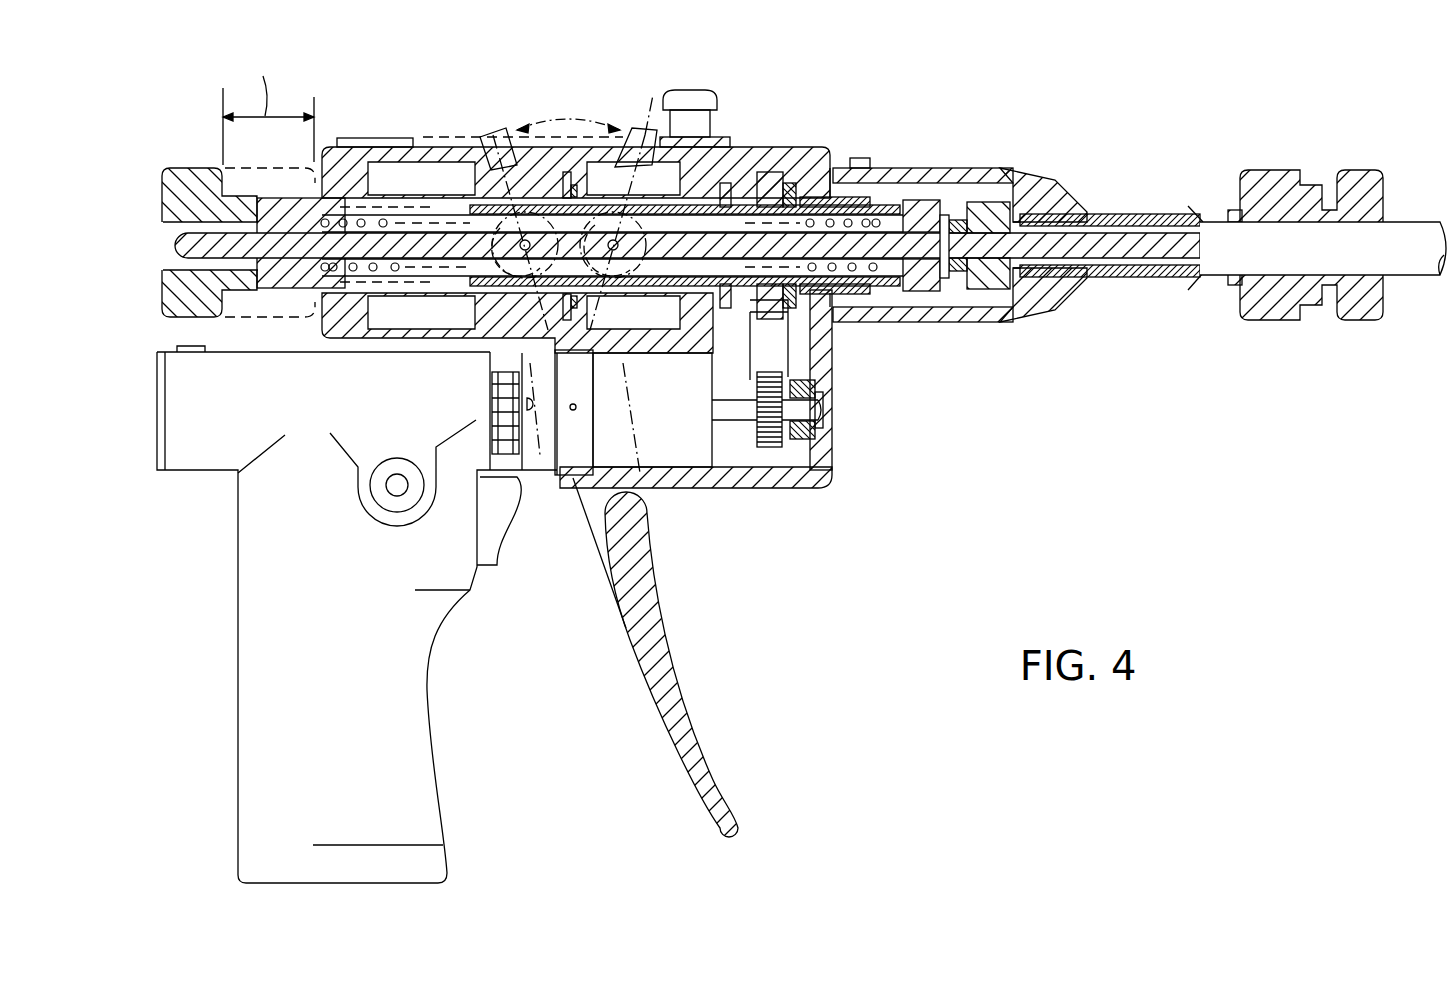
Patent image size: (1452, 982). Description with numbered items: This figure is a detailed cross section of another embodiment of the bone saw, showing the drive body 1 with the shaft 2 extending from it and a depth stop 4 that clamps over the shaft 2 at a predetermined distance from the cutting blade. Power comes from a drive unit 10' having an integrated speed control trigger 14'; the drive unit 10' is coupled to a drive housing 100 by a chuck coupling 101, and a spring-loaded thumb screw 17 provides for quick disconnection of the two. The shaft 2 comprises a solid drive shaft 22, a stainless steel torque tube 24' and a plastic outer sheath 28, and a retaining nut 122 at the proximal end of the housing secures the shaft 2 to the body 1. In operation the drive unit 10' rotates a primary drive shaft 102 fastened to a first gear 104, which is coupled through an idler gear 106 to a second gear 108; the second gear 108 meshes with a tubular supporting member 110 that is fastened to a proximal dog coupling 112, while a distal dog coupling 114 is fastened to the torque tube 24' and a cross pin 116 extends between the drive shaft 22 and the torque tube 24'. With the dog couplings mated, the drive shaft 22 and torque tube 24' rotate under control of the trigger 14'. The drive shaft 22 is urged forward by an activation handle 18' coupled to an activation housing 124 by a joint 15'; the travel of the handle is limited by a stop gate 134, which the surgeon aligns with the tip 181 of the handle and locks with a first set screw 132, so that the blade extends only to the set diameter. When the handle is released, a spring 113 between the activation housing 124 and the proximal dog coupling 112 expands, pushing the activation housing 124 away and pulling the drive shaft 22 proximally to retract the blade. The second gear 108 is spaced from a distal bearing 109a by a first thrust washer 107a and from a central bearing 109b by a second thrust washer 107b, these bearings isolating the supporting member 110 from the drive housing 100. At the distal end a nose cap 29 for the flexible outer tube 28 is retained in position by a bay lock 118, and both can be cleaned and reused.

The drive body 1 is at (334, 614).
The shaft 2 is at (1418, 282).
The depth stop 4 is at (1319, 152).
The drive unit 10' is at (357, 614).
The speed control trigger 14' is at (504, 551).
The joint 15' is at (517, 344).
The spring-loaded thumb screw 17 is at (492, 388).
The activation handle 18' is at (662, 657).
The drive shaft 22 is at (1102, 253).
The torque tube 24' is at (1209, 291).
The outer sheath 28 is at (1127, 213).
The nose cap 29 is at (1033, 180).
The drive housing 100 is at (827, 467).
The chuck coupling 101 is at (665, 452).
The primary drive shaft 102 is at (733, 413).
The first gear 104 is at (770, 447).
The idler gear 106 is at (795, 375).
The first thrust washer 107a is at (803, 190).
The second thrust washer 107b is at (725, 183).
The second gear 108 is at (770, 172).
The distal bearing 109a is at (815, 335).
The central bearing 109b is at (616, 345).
The tubular supporting member 110 is at (885, 273).
The proximal dog coupling 112 is at (932, 200).
The spring 113 is at (810, 190).
The distal dog coupling 114 is at (1013, 307).
The cross pin 116 is at (948, 273).
The bay lock 118 is at (862, 158).
The retaining nut 122 is at (190, 190).
The activation housing 124 is at (283, 288).
The first set screw 132 is at (683, 90).
The stop gate 134 is at (368, 137).
The tip 181 is at (502, 128).